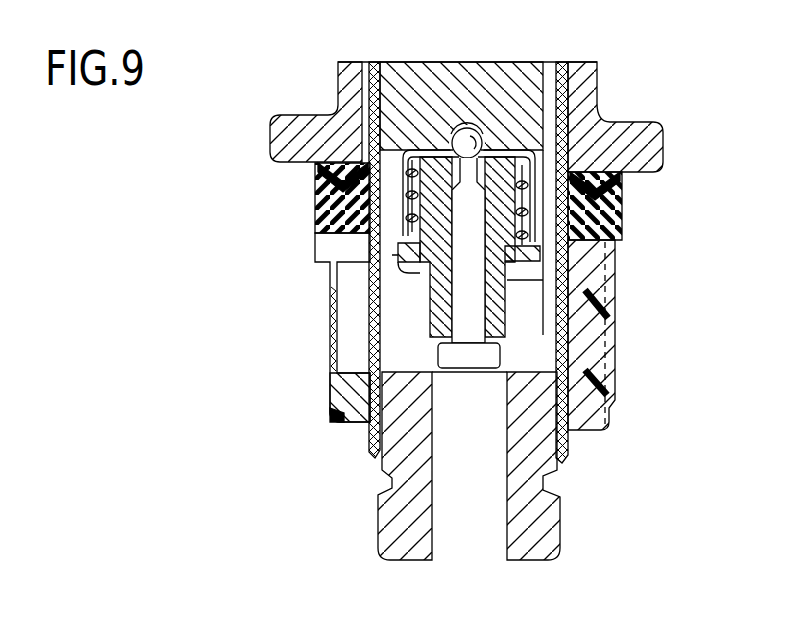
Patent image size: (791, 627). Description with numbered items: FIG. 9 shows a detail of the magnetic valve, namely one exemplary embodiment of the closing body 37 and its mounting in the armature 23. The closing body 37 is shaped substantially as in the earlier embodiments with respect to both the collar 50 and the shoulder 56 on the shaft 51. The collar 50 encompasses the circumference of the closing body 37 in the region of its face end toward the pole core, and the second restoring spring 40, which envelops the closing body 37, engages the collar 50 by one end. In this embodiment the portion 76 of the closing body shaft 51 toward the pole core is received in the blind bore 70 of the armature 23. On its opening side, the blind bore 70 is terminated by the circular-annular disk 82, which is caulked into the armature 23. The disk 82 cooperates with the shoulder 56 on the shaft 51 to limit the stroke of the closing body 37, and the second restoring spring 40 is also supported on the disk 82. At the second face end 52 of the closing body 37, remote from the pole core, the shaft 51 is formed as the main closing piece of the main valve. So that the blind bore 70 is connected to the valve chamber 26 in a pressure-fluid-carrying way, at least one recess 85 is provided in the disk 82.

The armature 23 is at (508, 80).
The blind bore 70 is at (515, 153).
The collar 50 is at (520, 165).
The second restoring spring 40 is at (558, 192).
The shoulder 56 is at (622, 230).
The circular-annular disk 82 is at (540, 250).
The shaft 51 is at (497, 284).
The second face end 52 is at (493, 352).
The portion toward the pole core 76 is at (430, 203).
The recess 85 is at (402, 260).
The closing body 37 is at (418, 288).
The valve chamber 26 is at (393, 313).